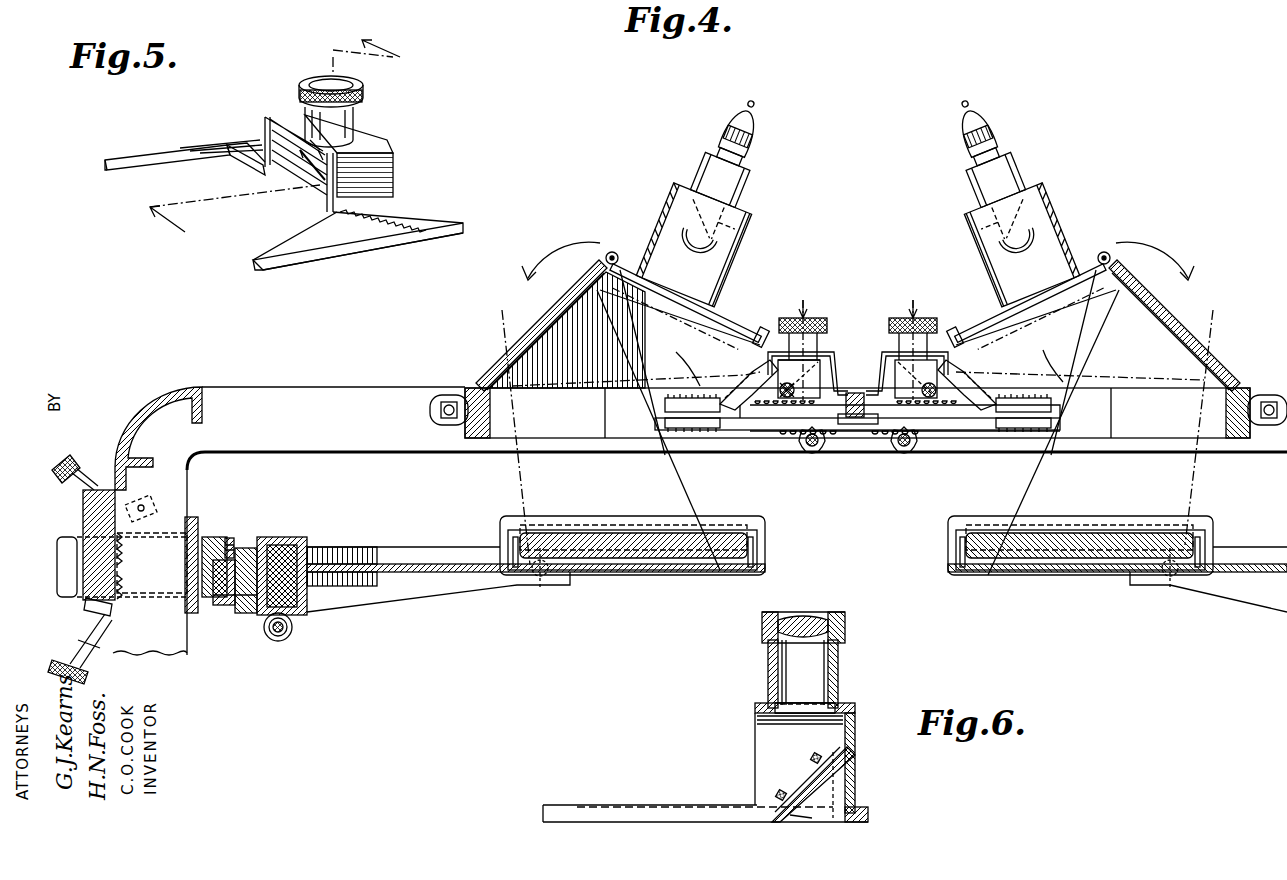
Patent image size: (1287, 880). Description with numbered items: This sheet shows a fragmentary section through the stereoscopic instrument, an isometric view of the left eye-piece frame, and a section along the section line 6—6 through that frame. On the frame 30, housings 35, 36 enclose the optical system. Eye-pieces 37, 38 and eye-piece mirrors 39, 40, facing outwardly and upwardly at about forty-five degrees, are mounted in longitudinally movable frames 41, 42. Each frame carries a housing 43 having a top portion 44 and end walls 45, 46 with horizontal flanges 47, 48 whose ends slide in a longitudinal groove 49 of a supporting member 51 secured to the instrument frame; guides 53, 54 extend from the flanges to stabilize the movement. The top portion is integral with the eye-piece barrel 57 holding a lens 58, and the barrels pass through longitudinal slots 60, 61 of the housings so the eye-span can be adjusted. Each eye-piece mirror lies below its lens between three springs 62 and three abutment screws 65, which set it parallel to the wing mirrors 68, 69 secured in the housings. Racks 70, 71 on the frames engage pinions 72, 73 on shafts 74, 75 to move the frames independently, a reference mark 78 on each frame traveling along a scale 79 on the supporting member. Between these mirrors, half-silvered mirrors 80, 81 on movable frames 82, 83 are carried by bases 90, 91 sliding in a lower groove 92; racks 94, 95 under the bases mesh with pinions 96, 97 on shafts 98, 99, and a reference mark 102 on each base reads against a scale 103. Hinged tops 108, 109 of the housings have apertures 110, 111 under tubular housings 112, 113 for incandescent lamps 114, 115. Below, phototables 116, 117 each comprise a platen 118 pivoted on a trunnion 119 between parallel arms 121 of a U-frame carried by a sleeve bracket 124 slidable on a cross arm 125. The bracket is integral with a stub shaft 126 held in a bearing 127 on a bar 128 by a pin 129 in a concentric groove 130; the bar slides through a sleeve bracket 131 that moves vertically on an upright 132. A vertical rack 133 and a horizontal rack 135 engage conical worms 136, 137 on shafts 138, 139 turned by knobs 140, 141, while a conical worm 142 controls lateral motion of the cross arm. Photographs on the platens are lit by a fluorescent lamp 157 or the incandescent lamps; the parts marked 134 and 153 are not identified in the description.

In FIG. 5, the section line 6 is at (260, 133).
In FIG. 4, the frame 30 is at (312, 393).
In FIG. 4, the housing 35 is at (543, 345).
In FIG. 4, the housing 36 is at (1166, 322).
In FIG. 4, the eye-piece 37 is at (813, 307).
In FIG. 5, the eye-piece 37 is at (374, 97).
In FIG. 6, the eye-piece 37 is at (810, 611).
In FIG. 4, the eye-piece 38 is at (914, 307).
In FIG. 4, the eye-piece mirror 39 is at (808, 364).
In FIG. 5, the eye-piece mirror 39 is at (323, 185).
In FIG. 6, the eye-piece mirror 39 is at (813, 784).
In FIG. 4, the eye-piece mirror 40 is at (907, 364).
In FIG. 4, the longitudinally movable frame 41 is at (711, 384).
In FIG. 5, the longitudinally movable frame 41 is at (330, 225).
In FIG. 4, the longitudinally movable frame 42 is at (1015, 393).
In FIG. 5, the housing 43 is at (405, 150).
In FIG. 6, the housing 43 is at (856, 786).
In FIG. 5, the top portion 44 is at (365, 133).
In FIG. 6, the top portion 44 is at (846, 712).
In FIG. 5, the end wall 45 is at (265, 122).
In FIG. 5, the end wall 46 is at (393, 170).
In FIG. 5, the horizontal flange 47 is at (236, 145).
In FIG. 6, the horizontal flange 47 is at (733, 805).
In FIG. 5, the horizontal flange 48 is at (436, 236).
In FIG. 4, the longitudinal groove 49 is at (665, 405).
In FIG. 4, the supporting member 51 is at (1072, 443).
In FIG. 5, the guide 53 is at (138, 155).
In FIG. 6, the guide 53 is at (606, 805).
In FIG. 5, the guide 54 is at (292, 262).
In FIG. 5, the barrel 57 is at (308, 114).
In FIG. 6, the barrel 57 is at (768, 666).
In FIG. 6, the lens 58 is at (803, 640).
In FIG. 4, the longitudinal slot 60 is at (786, 338).
In FIG. 4, the longitudinal slot 61 is at (929, 338).
In FIG. 6, the spring 62 is at (812, 820).
In FIG. 5, the abutment screw 65 is at (290, 166).
In FIG. 6, the abutment screw 65 is at (816, 756).
In FIG. 4, the wing mirror 68 is at (508, 357).
In FIG. 4, the wing mirror 69 is at (1120, 345).
In FIG. 4, the longitudinal rack 70 is at (849, 390).
In FIG. 5, the longitudinal rack 70 is at (440, 215).
In FIG. 4, the longitudinal rack 71 is at (870, 388).
In FIG. 4, the pinion 72 is at (748, 455).
In FIG. 4, the pinion 73 is at (910, 450).
In FIG. 4, the shaft 74 is at (772, 455).
In FIG. 4, the shaft 75 is at (950, 440).
In FIG. 4, the reference mark 78 is at (1050, 376).
In FIG. 5, the reference mark 78 is at (128, 178).
In FIG. 6, the reference mark 78 is at (560, 801).
In FIG. 4, the scale 79 is at (672, 386).
In FIG. 4, the half-silvered mirror 80 is at (746, 372).
In FIG. 4, the half-silvered mirror 81 is at (986, 382).
In FIG. 4, the movable frame 82 is at (742, 345).
In FIG. 4, the movable frame 83 is at (1005, 342).
In FIG. 4, the base 90 is at (712, 447).
In FIG. 4, the base 91 is at (995, 447).
In FIG. 4, the groove 92 is at (665, 425).
In FIG. 4, the longitudinal rack 94 is at (828, 454).
In FIG. 4, the longitudinal rack 95 is at (880, 455).
In FIG. 4, the pinion 96 is at (802, 455).
In FIG. 4, the pinion 97 is at (905, 456).
In FIG. 4, the shaft 98 is at (812, 456).
In FIG. 4, the shaft 99 is at (893, 470).
In FIG. 4, the reference mark 102 is at (672, 465).
In FIG. 4, the scale 103 is at (652, 452).
In FIG. 4, the hinged top 108 is at (747, 318).
In FIG. 4, the hinged top 109 is at (975, 318).
In FIG. 4, the aperture 110 is at (672, 304).
In FIG. 4, the aperture 111 is at (1032, 302).
In FIG. 4, the tubular housing 112 is at (672, 188).
In FIG. 4, the tubular housing 113 is at (1050, 184).
In FIG. 4, the incandescent lamp 114 is at (750, 222).
In FIG. 4, the incandescent lamp 115 is at (968, 222).
In FIG. 4, the phototable 116 is at (578, 578).
In FIG. 4, the phototable 117 is at (1135, 584).
In FIG. 4, the platen 118 is at (645, 577).
In FIG. 4, the trunnion 119 is at (860, 578).
In FIG. 4, the parallel arm 121 is at (440, 592).
In FIG. 4, the sleeve bracket 124 is at (308, 542).
In FIG. 4, the cross arm 125 is at (282, 542).
In FIG. 4, the stub shaft 126 is at (242, 608).
In FIG. 4, the bearing 127 is at (214, 600).
In FIG. 4, the bar 128 is at (213, 536).
In FIG. 4, the pin 129 is at (235, 538).
In FIG. 4, the concentric groove 130 is at (235, 625).
In FIG. 4, the sleeve bracket 131 is at (192, 516).
In FIG. 4, the upright 132 is at (186, 652).
In FIG. 4, the vertical rack 133 is at (125, 640).
In FIG. 4, the knob 134 is at (86, 545).
In FIG. 4, the horizontal rack 135 is at (132, 566).
In FIG. 4, the conical worm 136 is at (86, 608).
In FIG. 4, the conical worm 137 is at (154, 505).
In FIG. 4, the shaft 138 is at (105, 655).
In FIG. 4, the shaft 139 is at (88, 486).
In FIG. 4, the knob 140 is at (66, 662).
In FIG. 4, the knob 141 is at (66, 460).
In FIG. 4, the conical worm 142 is at (296, 628).
In FIG. 4, the center line 153 is at (540, 526).
In FIG. 4, the fluorescent lamp 157 is at (613, 532).